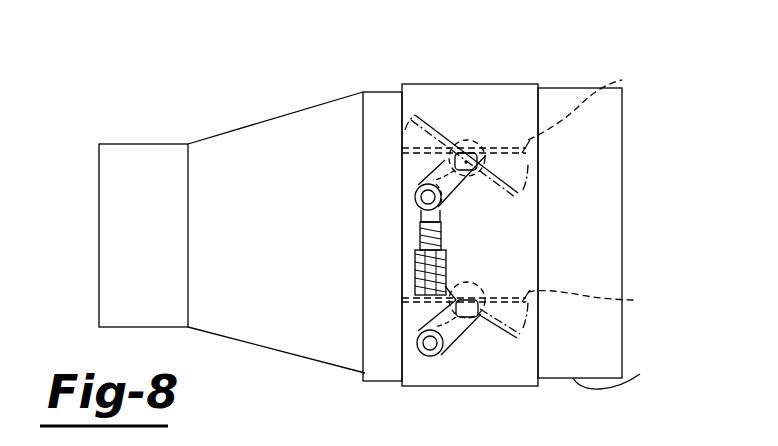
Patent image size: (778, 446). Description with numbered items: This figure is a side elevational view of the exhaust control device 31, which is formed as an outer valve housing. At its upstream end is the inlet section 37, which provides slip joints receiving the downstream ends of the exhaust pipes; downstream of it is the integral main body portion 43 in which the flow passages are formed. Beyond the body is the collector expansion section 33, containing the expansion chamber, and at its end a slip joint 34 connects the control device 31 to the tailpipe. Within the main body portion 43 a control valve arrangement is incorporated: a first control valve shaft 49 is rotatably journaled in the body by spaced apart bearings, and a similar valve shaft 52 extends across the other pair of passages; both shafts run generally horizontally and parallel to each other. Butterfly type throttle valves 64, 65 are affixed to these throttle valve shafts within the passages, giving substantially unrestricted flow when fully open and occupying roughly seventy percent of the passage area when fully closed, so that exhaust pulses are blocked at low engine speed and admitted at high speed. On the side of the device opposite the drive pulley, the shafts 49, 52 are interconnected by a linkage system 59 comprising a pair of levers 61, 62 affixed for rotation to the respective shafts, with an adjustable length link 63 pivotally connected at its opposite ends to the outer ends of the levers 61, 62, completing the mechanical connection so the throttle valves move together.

The exhaust control device 31 is at (360, 384).
The collector expansion section 33 is at (245, 127).
The slip joint 34 is at (118, 143).
The inlet section 37 is at (604, 241).
The main body portion 43 is at (538, 84).
The first control valve shaft 49 is at (466, 192).
The valve shaft 52 is at (460, 293).
The linkage system 59 is at (433, 358).
The lever 61 is at (470, 140).
The lever 62 is at (460, 338).
The adjustable length link 63 is at (420, 232).
The butterfly type throttle valve 64 is at (591, 103).
The butterfly type throttle valve 65 is at (600, 305).